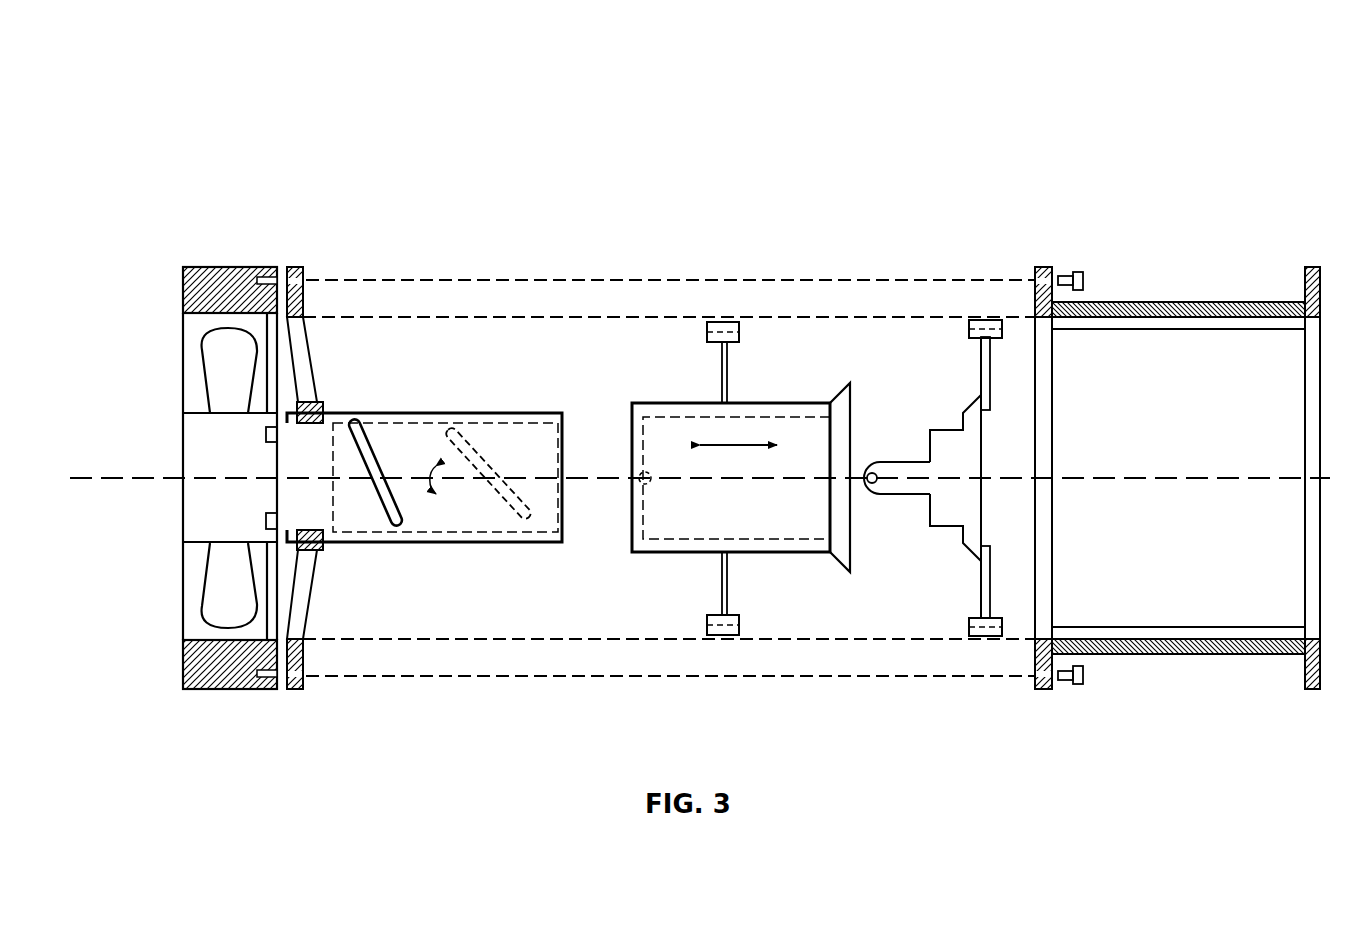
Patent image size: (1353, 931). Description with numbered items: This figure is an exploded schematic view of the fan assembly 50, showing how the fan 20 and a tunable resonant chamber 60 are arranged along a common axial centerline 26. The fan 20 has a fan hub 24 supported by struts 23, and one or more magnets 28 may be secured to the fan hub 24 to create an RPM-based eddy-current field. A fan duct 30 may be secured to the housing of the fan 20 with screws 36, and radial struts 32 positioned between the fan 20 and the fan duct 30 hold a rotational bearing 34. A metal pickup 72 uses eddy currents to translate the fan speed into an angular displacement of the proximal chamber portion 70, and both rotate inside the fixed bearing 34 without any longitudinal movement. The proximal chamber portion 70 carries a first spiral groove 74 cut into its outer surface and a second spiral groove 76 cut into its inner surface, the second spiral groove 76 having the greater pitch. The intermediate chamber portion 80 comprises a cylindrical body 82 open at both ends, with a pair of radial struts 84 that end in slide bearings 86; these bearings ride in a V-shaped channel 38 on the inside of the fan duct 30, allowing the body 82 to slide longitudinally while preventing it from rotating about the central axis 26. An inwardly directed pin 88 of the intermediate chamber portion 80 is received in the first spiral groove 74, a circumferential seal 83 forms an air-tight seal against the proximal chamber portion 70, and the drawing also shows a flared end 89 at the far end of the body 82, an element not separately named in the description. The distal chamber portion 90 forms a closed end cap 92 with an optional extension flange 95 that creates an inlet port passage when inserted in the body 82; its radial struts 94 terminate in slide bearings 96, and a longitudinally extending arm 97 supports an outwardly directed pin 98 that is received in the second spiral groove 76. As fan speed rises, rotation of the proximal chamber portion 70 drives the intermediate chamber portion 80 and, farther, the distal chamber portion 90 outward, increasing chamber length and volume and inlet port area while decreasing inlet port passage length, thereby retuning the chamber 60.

The fan 20 is at (202, 436).
The struts 23 is at (252, 350).
The fan hub 24 is at (192, 438).
The axial centerline 26 is at (82, 478).
The magnets 28 is at (265, 433).
The fan duct 30 is at (1177, 477).
The radial struts 32 is at (305, 365).
The rotational bearing 34 is at (320, 405).
The screws 36 is at (1080, 278).
The V-shaped channel 38 is at (1170, 330).
The fan assembly 50 is at (172, 152).
The chamber 60 is at (497, 260).
The proximal chamber portion 70 is at (445, 428).
The metal pickup 72 is at (319, 463).
The first spiral groove 74 is at (375, 452).
The second spiral groove 76 is at (480, 437).
The intermediate chamber portion 80 is at (738, 478).
The cylindrical body 82 is at (810, 403).
The circumferential seal 83 is at (638, 420).
The radial struts 84 is at (728, 360).
The slide bearings 86 is at (740, 332).
The pin 88 is at (650, 482).
The flared end 89 is at (848, 392).
The distal chamber portion 90 is at (945, 475).
The end cap 92 is at (975, 453).
The radial struts 94 is at (981, 368).
The extension flange 95 is at (950, 430).
The slide bearings 96 is at (983, 320).
The arm 97 is at (905, 495).
The pin 98 is at (873, 474).